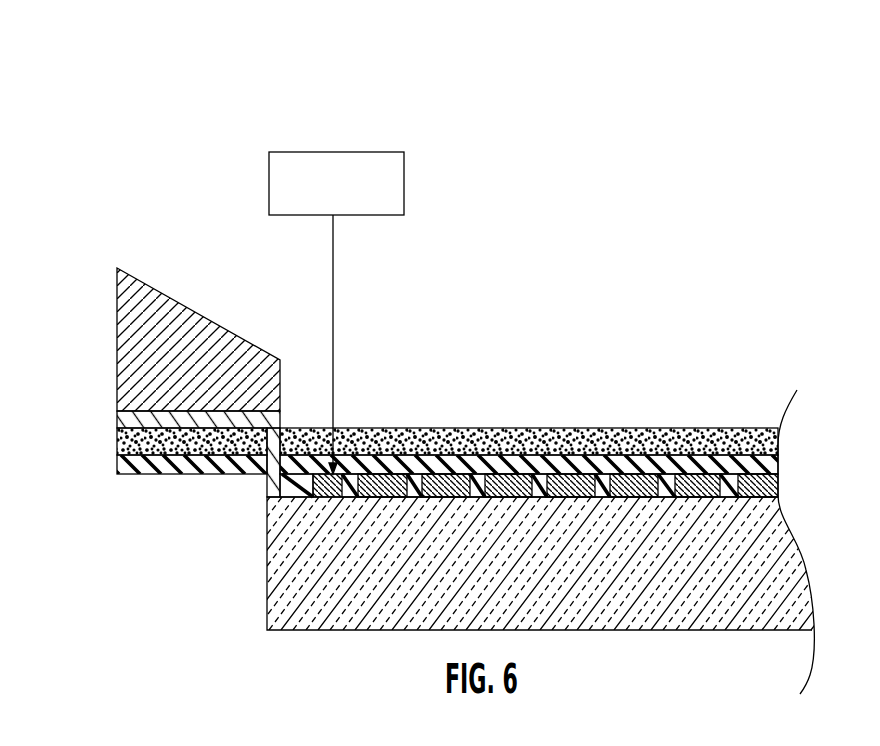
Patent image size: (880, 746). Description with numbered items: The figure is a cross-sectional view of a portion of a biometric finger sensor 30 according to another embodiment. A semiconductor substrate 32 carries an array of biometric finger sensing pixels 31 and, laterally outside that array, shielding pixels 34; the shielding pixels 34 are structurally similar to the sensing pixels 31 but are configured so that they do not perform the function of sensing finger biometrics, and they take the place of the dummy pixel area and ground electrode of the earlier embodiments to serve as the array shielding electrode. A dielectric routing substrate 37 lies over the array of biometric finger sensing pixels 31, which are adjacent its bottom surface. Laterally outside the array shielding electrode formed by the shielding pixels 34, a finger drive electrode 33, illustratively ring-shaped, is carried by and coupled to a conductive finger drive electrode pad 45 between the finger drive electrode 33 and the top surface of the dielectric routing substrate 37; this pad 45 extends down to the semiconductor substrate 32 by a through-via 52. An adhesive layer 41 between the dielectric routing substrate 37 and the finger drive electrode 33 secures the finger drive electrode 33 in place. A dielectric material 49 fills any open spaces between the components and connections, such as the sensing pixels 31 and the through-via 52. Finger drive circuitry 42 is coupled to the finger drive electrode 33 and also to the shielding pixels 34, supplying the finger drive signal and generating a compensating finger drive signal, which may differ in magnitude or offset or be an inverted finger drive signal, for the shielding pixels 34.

The biometric finger sensor 30 is at (156, 124).
The finger drive circuitry 42 is at (404, 174).
The finger drive electrode 33 is at (118, 368).
The conductive finger drive electrode pad 45 is at (117, 420).
The adhesive layer 41 is at (117, 443).
The dielectric routing substrate 37 is at (117, 465).
The through-via 52 is at (267, 487).
The dielectric material 49 is at (303, 498).
The shielding pixels 34 is at (327, 498).
The semiconductor substrate 32 is at (267, 607).
The biometric finger sensing pixels 31 is at (442, 498).